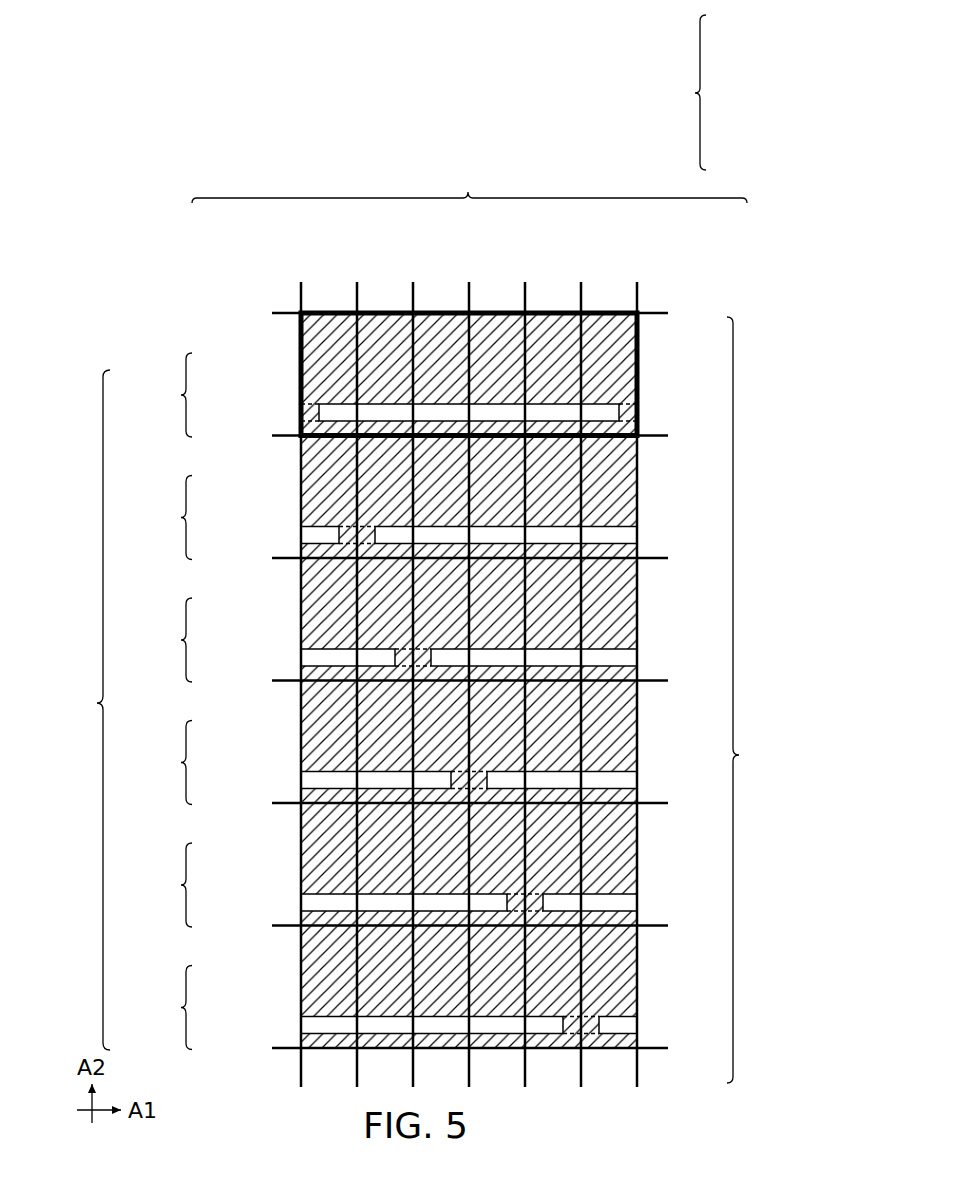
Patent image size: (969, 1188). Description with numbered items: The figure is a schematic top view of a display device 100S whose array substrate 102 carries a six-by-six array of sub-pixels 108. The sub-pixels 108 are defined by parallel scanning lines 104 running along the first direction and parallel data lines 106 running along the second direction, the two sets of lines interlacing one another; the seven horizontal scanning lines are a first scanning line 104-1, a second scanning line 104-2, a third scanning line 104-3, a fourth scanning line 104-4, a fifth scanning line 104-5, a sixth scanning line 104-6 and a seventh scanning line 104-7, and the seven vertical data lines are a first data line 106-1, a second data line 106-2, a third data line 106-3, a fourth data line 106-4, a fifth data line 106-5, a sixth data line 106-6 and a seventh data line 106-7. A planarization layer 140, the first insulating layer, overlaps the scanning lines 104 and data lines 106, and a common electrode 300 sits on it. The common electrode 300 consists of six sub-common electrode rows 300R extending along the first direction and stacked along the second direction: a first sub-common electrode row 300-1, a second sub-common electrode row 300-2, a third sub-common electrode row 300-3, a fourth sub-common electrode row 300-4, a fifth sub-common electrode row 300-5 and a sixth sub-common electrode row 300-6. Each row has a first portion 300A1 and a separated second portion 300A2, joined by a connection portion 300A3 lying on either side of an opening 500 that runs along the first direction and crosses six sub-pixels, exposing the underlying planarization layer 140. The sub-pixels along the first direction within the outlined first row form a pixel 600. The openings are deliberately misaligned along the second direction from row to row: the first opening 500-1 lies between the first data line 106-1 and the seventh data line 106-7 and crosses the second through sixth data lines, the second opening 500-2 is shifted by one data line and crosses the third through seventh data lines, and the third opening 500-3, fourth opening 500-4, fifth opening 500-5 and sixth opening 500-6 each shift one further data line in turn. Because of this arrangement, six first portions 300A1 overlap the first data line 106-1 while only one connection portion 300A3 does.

The display device 100S is at (152, 226).
The array substrate 102 is at (283, 302).
The scanning lines 104 is at (757, 700).
The first scanning line 104-1 is at (653, 1051).
The second scanning line 104-2 is at (653, 928).
The third scanning line 104-3 is at (653, 806).
The fourth scanning line 104-4 is at (653, 684).
The fifth scanning line 104-5 is at (653, 561).
The sixth scanning line 104-6 is at (653, 438).
The seventh scanning line 104-7 is at (653, 316).
The data lines 106 is at (469, 181).
The first data line 106-1 is at (301, 288).
The second data line 106-2 is at (357, 288).
The third data line 106-3 is at (412, 288).
The fourth data line 106-4 is at (469, 288).
The fifth data line 106-5 is at (525, 288).
The sixth data line 106-6 is at (582, 288).
The seventh data line 106-7 is at (640, 290).
The sub-pixels 108 is at (328, 310).
The planarization layer 140 is at (618, 413).
The common electrode 300 is at (82, 710).
The first sub-common electrode row 300-1 is at (373, 374).
The second sub-common electrode row 300-2 is at (373, 497).
The third sub-common electrode row 300-3 is at (373, 619).
The fourth sub-common electrode row 300-4 is at (373, 742).
The fifth sub-common electrode row 300-5 is at (373, 864).
The sixth sub-common electrode row 300-6 is at (373, 987).
The sub-common electrode rows 300R is at (151, 701).
The first portion 300A1 is at (300, 372).
The second portion 300A2 is at (300, 428).
The connection portion 300A3 is at (300, 408).
The opening 500 is at (678, 92).
The first opening 500-1 is at (603, 400).
The second opening 500-2 is at (332, 526).
The third opening 500-3 is at (332, 649).
The fourth opening 500-4 is at (332, 772).
The fifth opening 500-5 is at (332, 894).
The sixth opening 500-6 is at (332, 1016).
The pixel 600 is at (299, 345).